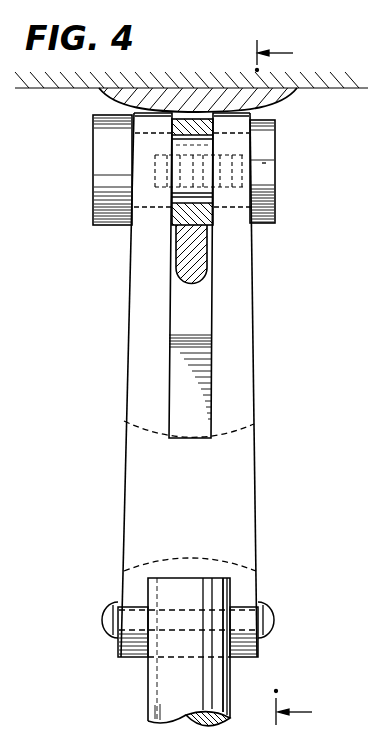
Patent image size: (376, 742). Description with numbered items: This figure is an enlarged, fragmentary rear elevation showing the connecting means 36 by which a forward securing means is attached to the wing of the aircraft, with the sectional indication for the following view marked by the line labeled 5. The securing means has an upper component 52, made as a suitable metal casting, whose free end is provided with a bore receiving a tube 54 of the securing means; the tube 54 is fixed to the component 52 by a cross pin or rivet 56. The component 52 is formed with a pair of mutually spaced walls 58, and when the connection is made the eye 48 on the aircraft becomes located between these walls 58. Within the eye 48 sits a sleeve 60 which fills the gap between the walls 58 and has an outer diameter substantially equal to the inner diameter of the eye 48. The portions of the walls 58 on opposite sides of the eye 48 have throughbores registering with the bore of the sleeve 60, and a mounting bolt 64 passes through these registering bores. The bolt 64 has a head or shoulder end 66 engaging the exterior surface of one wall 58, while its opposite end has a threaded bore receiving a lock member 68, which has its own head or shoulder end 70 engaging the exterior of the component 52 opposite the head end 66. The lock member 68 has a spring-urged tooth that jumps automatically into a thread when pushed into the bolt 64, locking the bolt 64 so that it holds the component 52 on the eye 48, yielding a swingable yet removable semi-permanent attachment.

The section line 5- 5 is at (294, 384).
The connecting means 36 is at (108, 258).
The eye 48 is at (194, 92).
The upper component 52 is at (116, 521).
The tube 54 is at (148, 680).
The cross pin or rivet 56 is at (103, 620).
The walls 58 is at (243, 310).
The sleeve 60 is at (205, 240).
The mounting bolt 64 is at (170, 193).
The head or shoulder end 66 is at (92, 128).
The lock member 68 is at (276, 229).
The head or shoulder end 70 is at (270, 167).